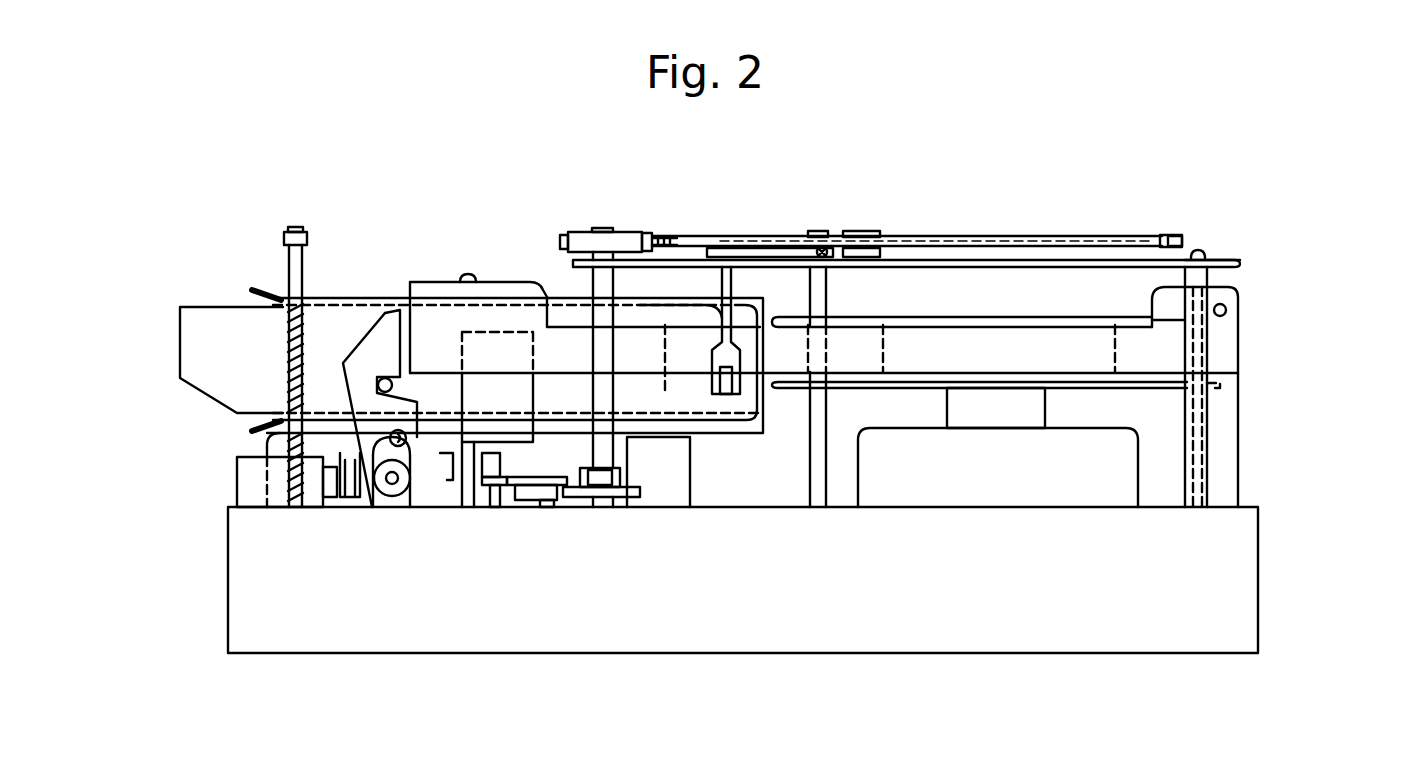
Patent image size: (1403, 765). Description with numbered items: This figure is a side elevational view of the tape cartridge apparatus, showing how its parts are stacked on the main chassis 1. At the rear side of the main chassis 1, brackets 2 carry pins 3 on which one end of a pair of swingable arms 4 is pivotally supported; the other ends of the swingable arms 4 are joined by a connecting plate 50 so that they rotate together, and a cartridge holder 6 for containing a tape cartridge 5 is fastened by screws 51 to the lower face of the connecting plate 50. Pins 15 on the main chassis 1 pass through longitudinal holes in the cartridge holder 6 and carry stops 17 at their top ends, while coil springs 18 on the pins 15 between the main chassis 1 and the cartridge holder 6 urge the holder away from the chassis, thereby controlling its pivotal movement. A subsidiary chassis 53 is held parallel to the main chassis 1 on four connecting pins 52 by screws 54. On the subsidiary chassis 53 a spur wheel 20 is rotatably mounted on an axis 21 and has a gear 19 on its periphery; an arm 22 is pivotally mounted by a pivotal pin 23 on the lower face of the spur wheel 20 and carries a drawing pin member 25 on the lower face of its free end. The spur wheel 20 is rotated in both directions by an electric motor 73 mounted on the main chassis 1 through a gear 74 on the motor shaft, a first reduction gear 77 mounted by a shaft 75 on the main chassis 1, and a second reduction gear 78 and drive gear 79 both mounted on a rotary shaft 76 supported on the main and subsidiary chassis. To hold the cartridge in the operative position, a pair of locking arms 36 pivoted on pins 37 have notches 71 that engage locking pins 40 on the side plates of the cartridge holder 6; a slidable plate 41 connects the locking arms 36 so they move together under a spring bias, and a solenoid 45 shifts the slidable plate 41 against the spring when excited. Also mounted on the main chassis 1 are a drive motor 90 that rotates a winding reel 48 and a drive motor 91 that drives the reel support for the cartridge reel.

The main chassis 1 is at (1232, 573).
The brackets 2 is at (1225, 407).
The pins 3 is at (1227, 310).
The swingable arms 4 is at (955, 345).
The tape cartridge 5 is at (192, 317).
The cartridge holder 6 is at (345, 298).
The pins 15 is at (297, 272).
The stops 17 is at (292, 228).
The coil springs 18 is at (283, 330).
The gear 19 is at (1183, 240).
The spur wheel 20 is at (1063, 237).
The axis 21 is at (875, 232).
The arm 22 is at (763, 252).
The pivotal pin 23 is at (816, 230).
The drawing pin member 25 is at (722, 280).
The locking arms 36 is at (398, 298).
The pins 37 is at (393, 497).
The locking pins 40 is at (283, 418).
The slidable plate 41 is at (347, 495).
The solenoid 45 is at (253, 478).
The winding reel 48 is at (1138, 390).
The connecting plate 50 is at (510, 298).
The screws 51 is at (469, 276).
The connecting pins 52 is at (1213, 274).
The subsidiary chassis 53 is at (1233, 260).
The screws 54 is at (830, 248).
The notches 71 is at (385, 384).
The electric motor 73 is at (463, 450).
The gear 74 is at (500, 500).
The shaft 75 is at (542, 503).
The rotary shaft 76 is at (603, 502).
The first reduction gear 77 is at (552, 507).
The second reduction gear 78 is at (630, 502).
The drive gear 79 is at (627, 238).
The drive motor 90 is at (1008, 480).
The drive motor 91 is at (668, 473).